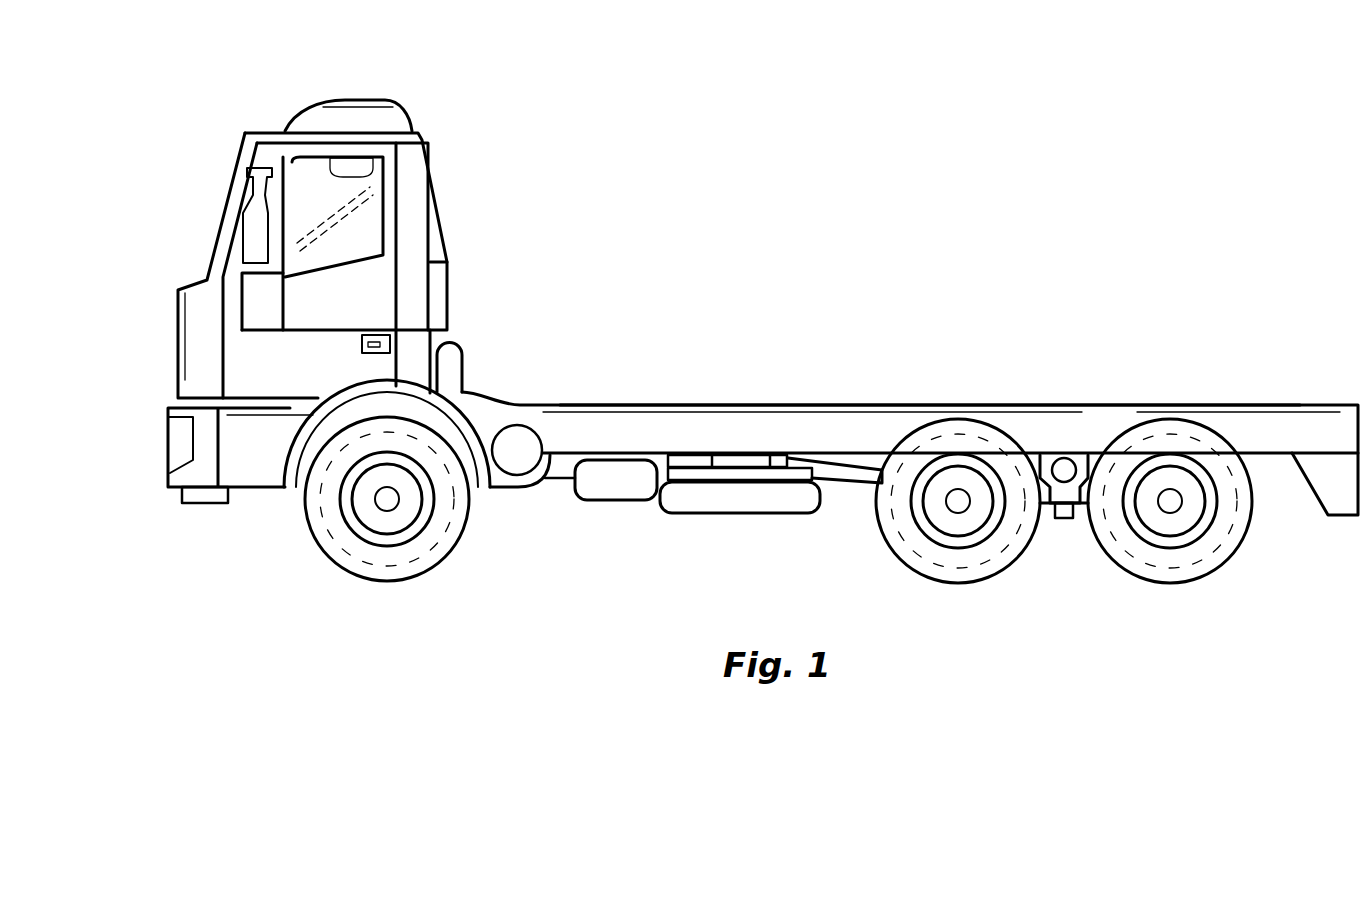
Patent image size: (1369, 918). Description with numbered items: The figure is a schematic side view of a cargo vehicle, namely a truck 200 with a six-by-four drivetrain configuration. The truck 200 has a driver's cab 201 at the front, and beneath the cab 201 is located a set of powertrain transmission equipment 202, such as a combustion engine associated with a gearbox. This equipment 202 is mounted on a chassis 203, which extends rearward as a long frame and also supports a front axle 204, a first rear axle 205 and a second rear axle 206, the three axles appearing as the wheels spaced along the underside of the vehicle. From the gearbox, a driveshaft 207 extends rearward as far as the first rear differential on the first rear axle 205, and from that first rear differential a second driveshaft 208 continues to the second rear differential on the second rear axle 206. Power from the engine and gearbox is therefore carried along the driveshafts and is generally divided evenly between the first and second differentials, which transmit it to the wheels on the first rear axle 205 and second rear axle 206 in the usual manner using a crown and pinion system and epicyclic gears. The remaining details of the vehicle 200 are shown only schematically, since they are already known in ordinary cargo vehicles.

The truck 200 is at (808, 105).
The driver's cab 201 is at (207, 287).
The powertrain transmission equipment 202 is at (481, 389).
The chassis 203 is at (830, 437).
The front axle 204 is at (380, 503).
The first rear axle 205 is at (955, 505).
The second rear axle 206 is at (1162, 505).
The driveshaft 207 is at (852, 477).
The second driveshaft 208 is at (1072, 505).